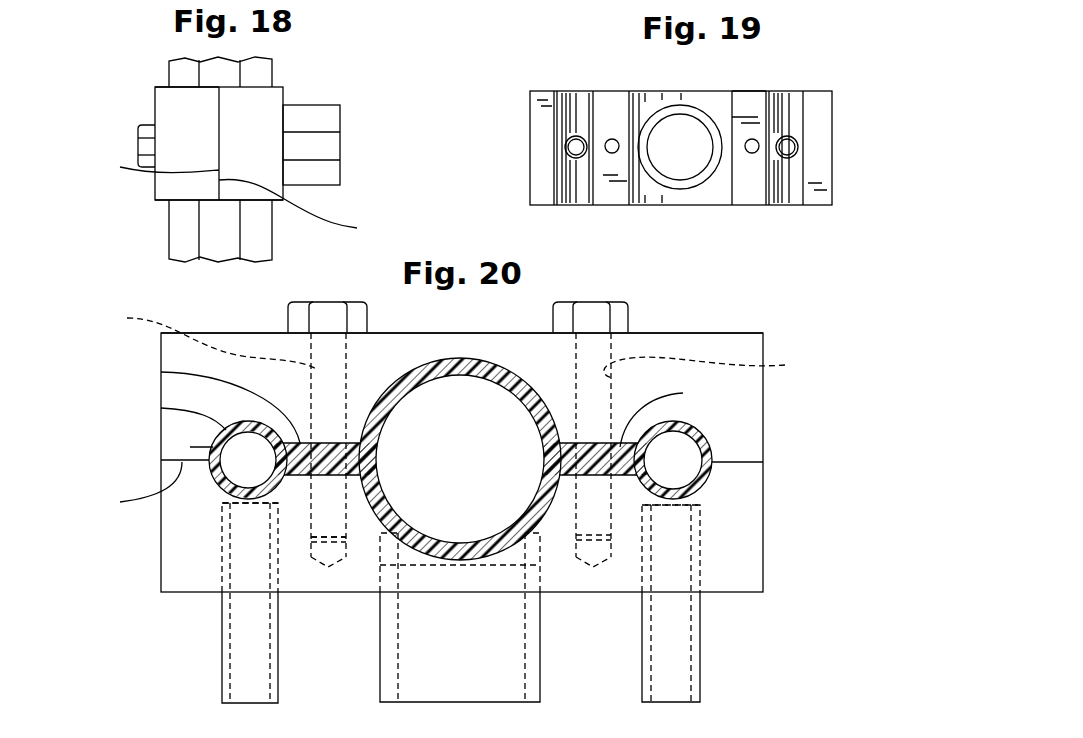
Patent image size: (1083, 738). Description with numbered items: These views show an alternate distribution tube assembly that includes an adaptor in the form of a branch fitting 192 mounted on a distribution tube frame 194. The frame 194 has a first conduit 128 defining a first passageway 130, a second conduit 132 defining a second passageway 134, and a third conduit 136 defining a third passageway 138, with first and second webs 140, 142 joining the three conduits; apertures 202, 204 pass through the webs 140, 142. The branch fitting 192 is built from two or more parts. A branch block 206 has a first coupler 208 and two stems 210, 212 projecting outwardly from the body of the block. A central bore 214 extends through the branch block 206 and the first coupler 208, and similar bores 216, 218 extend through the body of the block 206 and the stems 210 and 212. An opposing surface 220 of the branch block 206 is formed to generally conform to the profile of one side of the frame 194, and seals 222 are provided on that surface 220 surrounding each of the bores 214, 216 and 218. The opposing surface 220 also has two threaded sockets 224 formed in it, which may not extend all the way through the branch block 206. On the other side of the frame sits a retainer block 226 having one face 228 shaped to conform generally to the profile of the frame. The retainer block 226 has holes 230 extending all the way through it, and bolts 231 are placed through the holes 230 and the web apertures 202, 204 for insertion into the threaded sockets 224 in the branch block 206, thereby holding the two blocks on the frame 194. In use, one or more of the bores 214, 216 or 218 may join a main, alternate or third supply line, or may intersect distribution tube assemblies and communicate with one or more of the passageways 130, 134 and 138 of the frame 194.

In FIG. 18, the first conduit 128 is at (168, 225).
In FIG. 20, the first conduit 128 is at (440, 357).
In FIG. 20, the first passageway 130 is at (462, 388).
In FIG. 20, the second conduit 132 is at (693, 425).
In FIG. 20, the second passageway 134 is at (688, 473).
In FIG. 18, the third conduit 136 is at (207, 238).
In FIG. 20, the third conduit 136 is at (161, 408).
In FIG. 20, the third passageway 138 is at (190, 447).
In FIG. 20, the first web 140 is at (683, 393).
In FIG. 20, the second web 142 is at (161, 372).
In FIG. 20, the branch fitting 192 is at (766, 354).
In FIG. 18, the distribution tube frame 194 is at (275, 65).
In FIG. 20, the aperture 202 is at (607, 452).
In FIG. 20, the aperture 204 is at (343, 487).
In FIG. 18, the branch block 206 is at (270, 97).
In FIG. 19, the branch block 206 is at (541, 91).
In FIG. 20, the branch block 206 is at (763, 560).
In FIG. 18, the first coupler 208 is at (330, 173).
In FIG. 20, the first coupler 208 is at (540, 688).
In FIG. 20, the stem 210 is at (700, 633).
In FIG. 18, the stem 212 is at (332, 147).
In FIG. 20, the stem 212 is at (222, 646).
In FIG. 19, the central bore 214 is at (667, 130).
In FIG. 20, the central bore 214 is at (400, 688).
In FIG. 19, the bore 216 is at (572, 143).
In FIG. 20, the bore 216 is at (683, 695).
In FIG. 19, the bore 218 is at (783, 148).
In FIG. 20, the bore 218 is at (240, 697).
In FIG. 18, the opposing surface 220 is at (184, 177).
In FIG. 19, the opposing surface 220 is at (753, 200).
In FIG. 20, the opposing surface 220 is at (742, 462).
In FIG. 19, the seal 222 is at (568, 157).
In FIG. 20, the seal 222 is at (222, 493).
In FIG. 19, the threaded socket 224 is at (752, 140).
In FIG. 20, the threaded socket 224 is at (250, 530).
In FIG. 18, the retainer block 226 is at (161, 97).
In FIG. 20, the retainer block 226 is at (161, 357).
In FIG. 18, the face 228 is at (306, 205).
In FIG. 20, the face 228 is at (135, 488).
In FIG. 20, the hole 230 is at (455, 342).
In FIG. 18, the bolt 231 is at (149, 127).
In FIG. 20, the bolt 231 is at (288, 318).